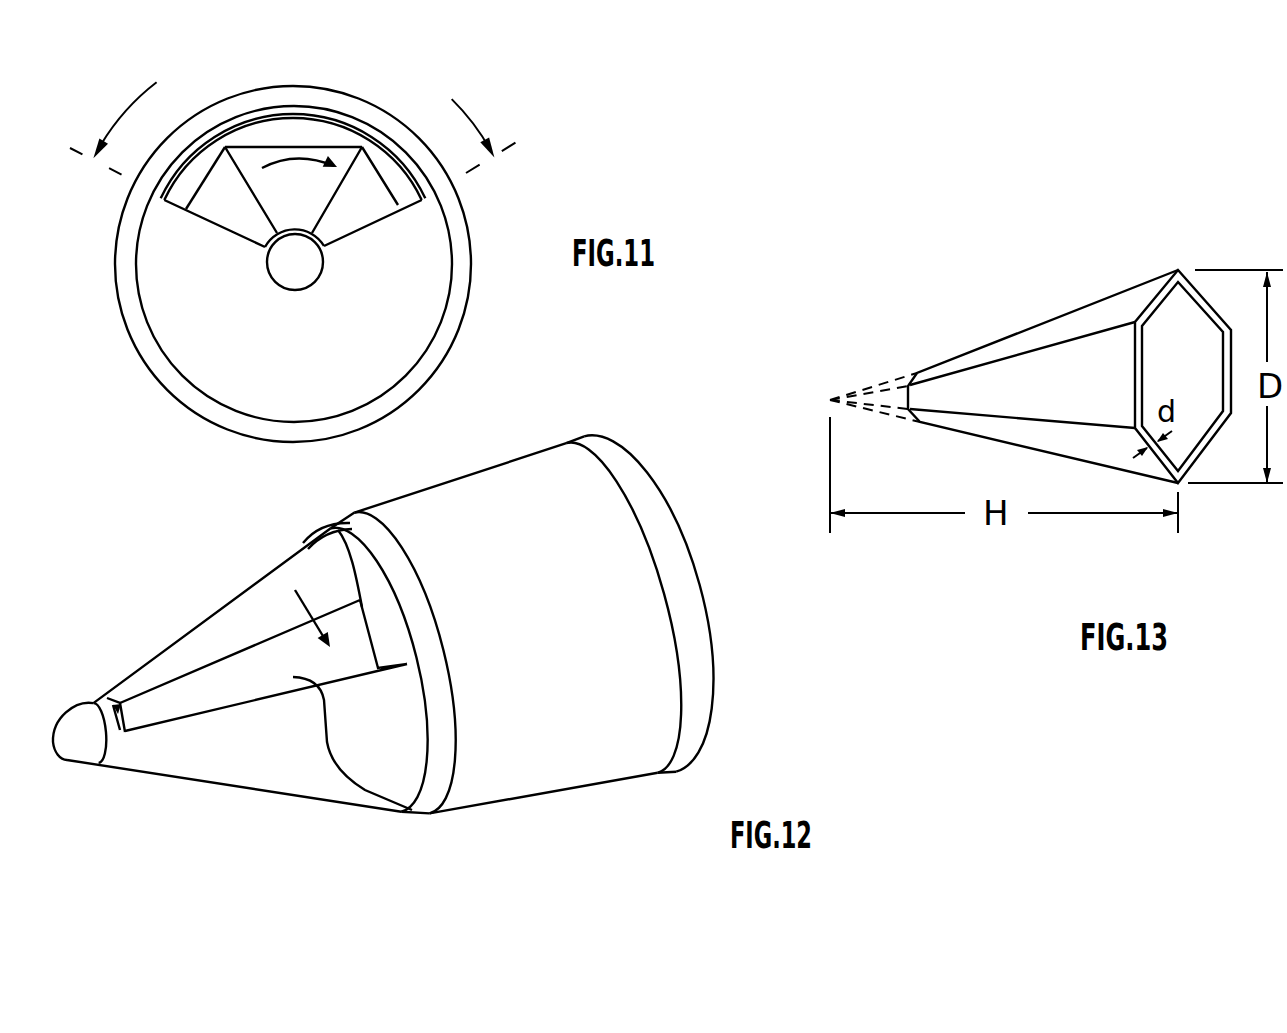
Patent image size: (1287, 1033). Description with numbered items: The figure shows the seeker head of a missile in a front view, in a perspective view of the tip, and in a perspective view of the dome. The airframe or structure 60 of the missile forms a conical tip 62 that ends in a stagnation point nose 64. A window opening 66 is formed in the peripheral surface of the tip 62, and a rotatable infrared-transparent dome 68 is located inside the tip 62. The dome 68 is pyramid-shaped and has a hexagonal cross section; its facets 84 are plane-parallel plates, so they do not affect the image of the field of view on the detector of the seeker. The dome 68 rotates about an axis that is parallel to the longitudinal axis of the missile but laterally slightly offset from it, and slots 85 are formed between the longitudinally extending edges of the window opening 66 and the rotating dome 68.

In FIG. 11, the airframe or structure of a missile 60 is at (378, 122).
In FIG. 12, the airframe or structure of a missile 60 is at (465, 512).
In FIG. 11, the conical tip 62 is at (194, 341).
In FIG. 12, the conical tip 62 is at (247, 756).
In FIG. 11, the stagnation point nose 64 is at (293, 270).
In FIG. 12, the stagnation point nose 64 is at (77, 735).
In FIG. 11, the window opening 66 is at (305, 113).
In FIG. 11, the rotatable infrared-transparent dome 68 is at (360, 198).
In FIG. 12, the rotatable infrared-transparent dome 68 is at (226, 632).
In FIG. 13, the rotatable infrared-transparent dome 68 is at (1083, 300).
In FIG. 12, the facets 84 is at (180, 662).
In FIG. 13, the facets 84 is at (987, 353).
In FIG. 11, the slots 85 is at (186, 209).
In FIG. 12, the slots 85 is at (429, 807).